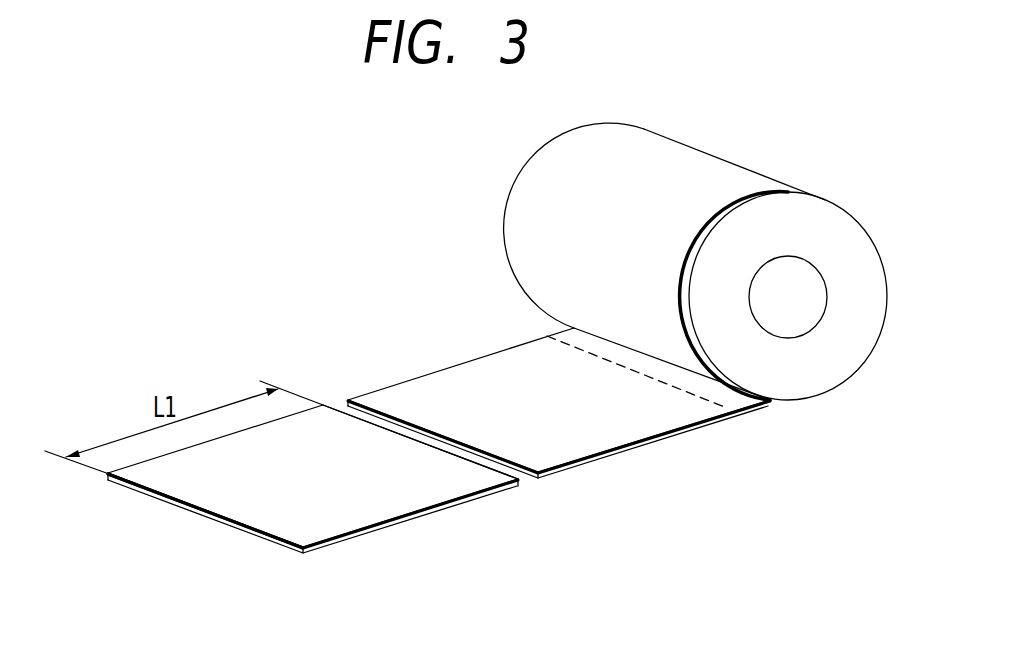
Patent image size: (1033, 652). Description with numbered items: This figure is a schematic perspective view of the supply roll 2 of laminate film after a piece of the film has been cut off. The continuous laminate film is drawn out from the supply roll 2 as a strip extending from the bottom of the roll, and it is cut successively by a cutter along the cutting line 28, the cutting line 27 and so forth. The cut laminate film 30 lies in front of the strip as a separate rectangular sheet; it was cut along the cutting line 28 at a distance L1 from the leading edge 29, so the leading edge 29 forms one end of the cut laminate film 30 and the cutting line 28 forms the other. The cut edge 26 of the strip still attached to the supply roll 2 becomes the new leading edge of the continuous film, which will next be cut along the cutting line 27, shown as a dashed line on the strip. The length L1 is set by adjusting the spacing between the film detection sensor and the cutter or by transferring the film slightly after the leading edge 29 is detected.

The supply roll 2 is at (730, 177).
The cut edge 26 is at (530, 478).
The cutting line 27 is at (556, 332).
The cutting line 28 is at (318, 398).
The leading edge 29 is at (277, 546).
The cut laminate film 30 is at (393, 498).